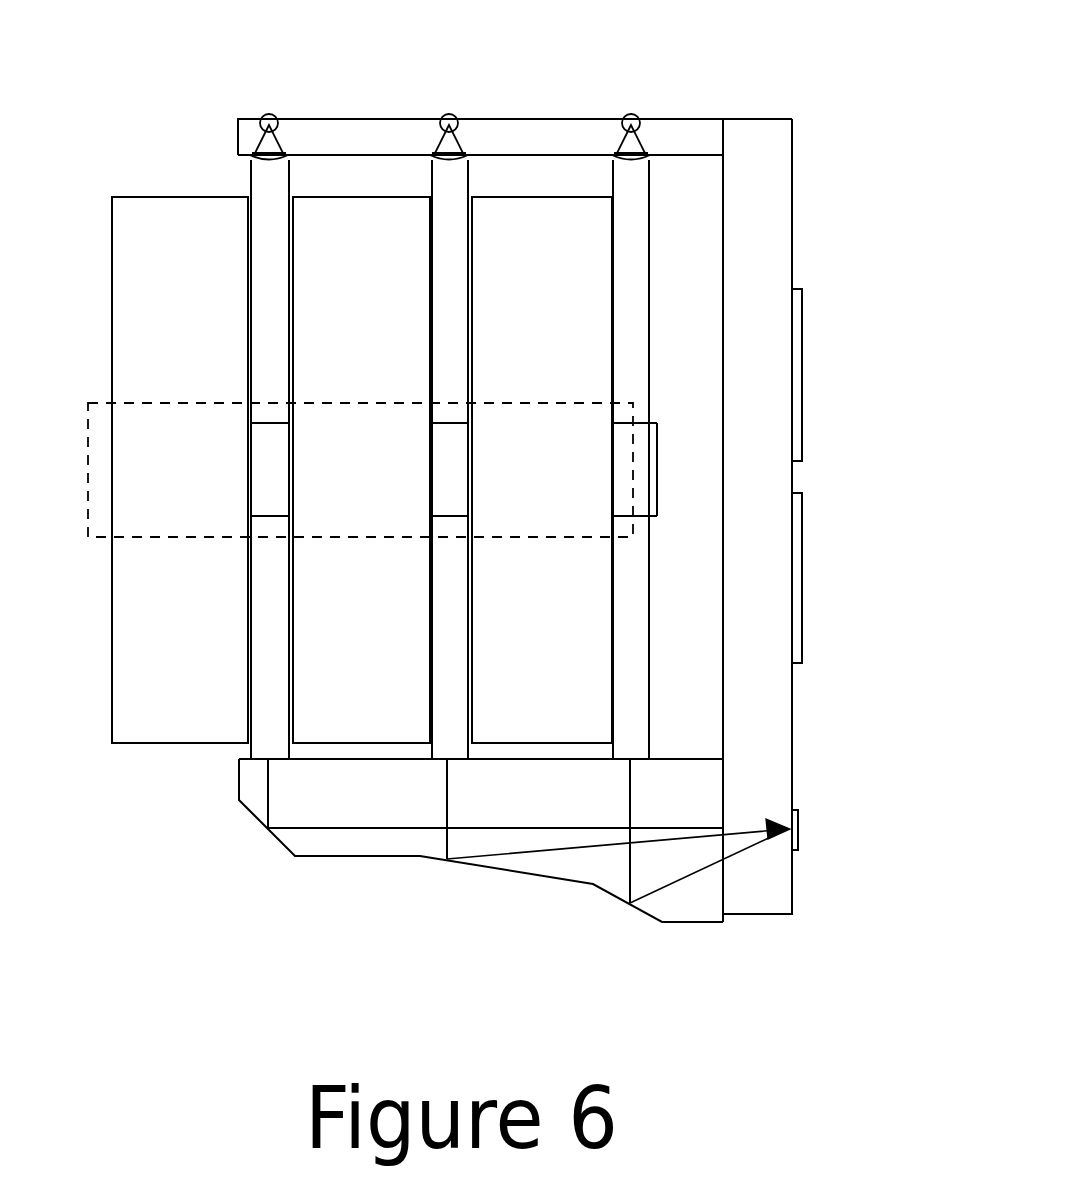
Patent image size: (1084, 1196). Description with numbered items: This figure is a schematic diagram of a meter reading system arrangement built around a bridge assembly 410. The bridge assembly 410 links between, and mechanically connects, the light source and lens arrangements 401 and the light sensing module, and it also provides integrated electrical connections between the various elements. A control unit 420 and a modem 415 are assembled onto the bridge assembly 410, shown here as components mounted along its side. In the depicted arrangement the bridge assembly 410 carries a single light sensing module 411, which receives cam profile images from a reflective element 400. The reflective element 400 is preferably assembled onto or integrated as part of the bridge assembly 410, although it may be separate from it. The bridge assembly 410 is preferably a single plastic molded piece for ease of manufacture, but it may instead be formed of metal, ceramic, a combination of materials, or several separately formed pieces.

The reflective element 400 is at (457, 864).
The light source and lens arrangements 401 is at (631, 114).
The bridge assembly 410 is at (777, 221).
The control unit 420 is at (802, 372).
The modem 415 is at (802, 594).
The light sensing module 411 is at (800, 832).